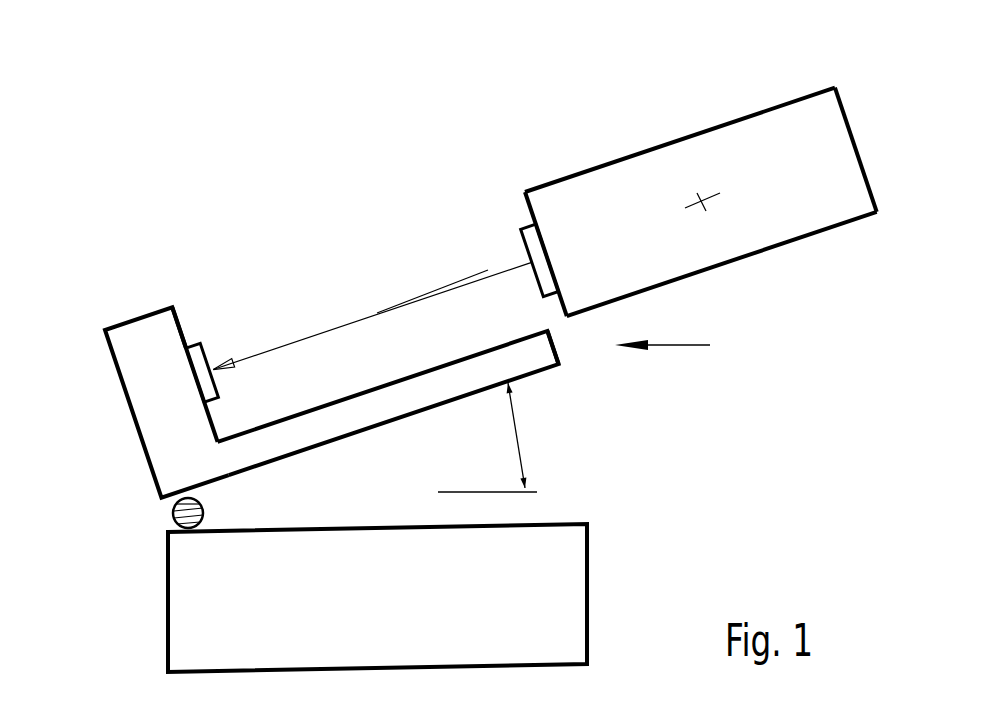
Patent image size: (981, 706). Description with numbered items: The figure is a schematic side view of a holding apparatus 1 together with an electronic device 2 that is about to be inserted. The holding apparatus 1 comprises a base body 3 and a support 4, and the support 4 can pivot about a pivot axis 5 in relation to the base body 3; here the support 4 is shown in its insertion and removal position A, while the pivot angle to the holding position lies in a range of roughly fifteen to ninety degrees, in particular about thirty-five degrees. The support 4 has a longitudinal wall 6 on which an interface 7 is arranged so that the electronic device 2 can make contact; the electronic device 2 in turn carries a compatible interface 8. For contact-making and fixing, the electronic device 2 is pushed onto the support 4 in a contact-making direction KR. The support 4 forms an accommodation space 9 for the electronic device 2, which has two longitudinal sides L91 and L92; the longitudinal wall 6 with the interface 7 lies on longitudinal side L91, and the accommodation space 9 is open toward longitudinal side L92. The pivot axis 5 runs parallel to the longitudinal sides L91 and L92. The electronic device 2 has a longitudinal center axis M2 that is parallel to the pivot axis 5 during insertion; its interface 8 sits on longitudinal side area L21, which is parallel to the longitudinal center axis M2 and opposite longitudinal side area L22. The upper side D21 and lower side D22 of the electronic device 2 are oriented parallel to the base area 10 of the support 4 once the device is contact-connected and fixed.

The holding apparatus 1 is at (323, 260).
The electronic device 2 is at (699, 184).
The base body 3 is at (572, 572).
The support 4 is at (552, 347).
The pivot axis 5 is at (205, 512).
The longitudinal wall 6 is at (174, 400).
The interface 7 is at (202, 372).
The interface 8 is at (540, 260).
The accommodation space 9 is at (372, 316).
The base area 10 is at (388, 403).
The contact-making direction KR is at (372, 316).
The longitudinal side L91 is at (179, 327).
The longitudinal side L92 is at (488, 270).
The longitudinal side area L21 is at (546, 254).
The longitudinal side area L22 is at (856, 150).
The upper side D21 is at (680, 140).
The lower side D22 is at (722, 264).
The longitudinal center axis M2 is at (703, 202).
The insertion and removal position A is at (681, 350).